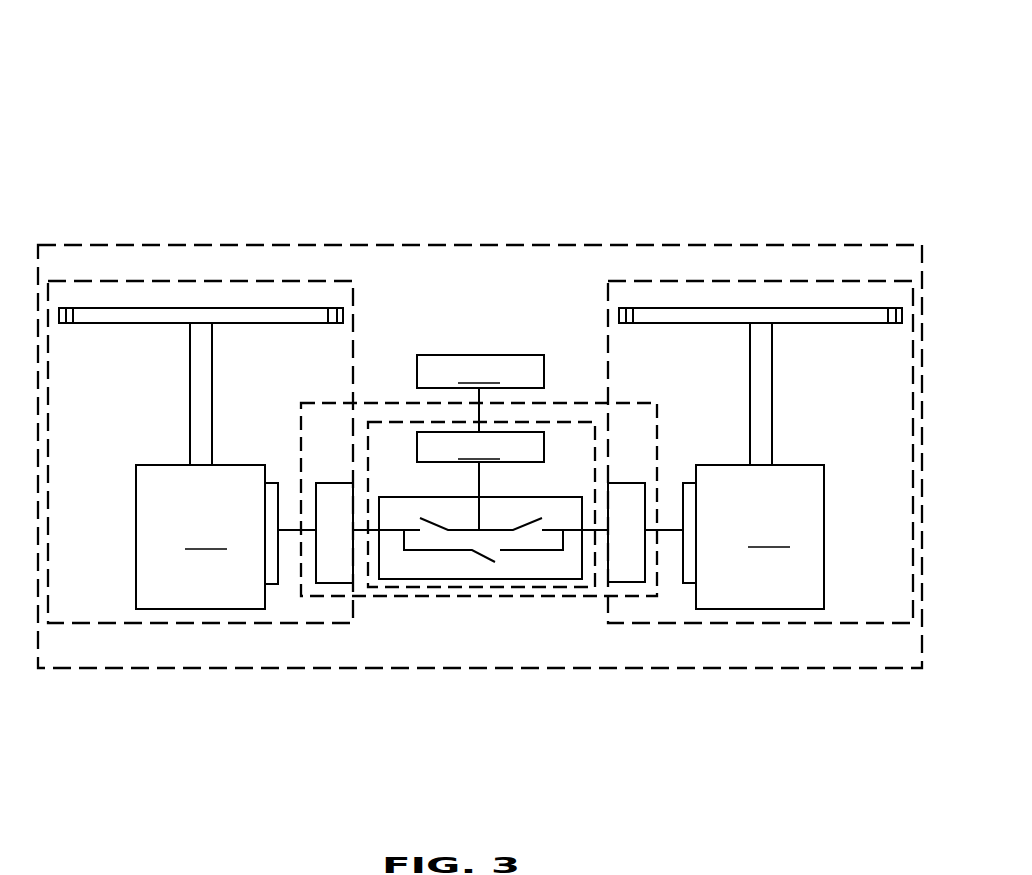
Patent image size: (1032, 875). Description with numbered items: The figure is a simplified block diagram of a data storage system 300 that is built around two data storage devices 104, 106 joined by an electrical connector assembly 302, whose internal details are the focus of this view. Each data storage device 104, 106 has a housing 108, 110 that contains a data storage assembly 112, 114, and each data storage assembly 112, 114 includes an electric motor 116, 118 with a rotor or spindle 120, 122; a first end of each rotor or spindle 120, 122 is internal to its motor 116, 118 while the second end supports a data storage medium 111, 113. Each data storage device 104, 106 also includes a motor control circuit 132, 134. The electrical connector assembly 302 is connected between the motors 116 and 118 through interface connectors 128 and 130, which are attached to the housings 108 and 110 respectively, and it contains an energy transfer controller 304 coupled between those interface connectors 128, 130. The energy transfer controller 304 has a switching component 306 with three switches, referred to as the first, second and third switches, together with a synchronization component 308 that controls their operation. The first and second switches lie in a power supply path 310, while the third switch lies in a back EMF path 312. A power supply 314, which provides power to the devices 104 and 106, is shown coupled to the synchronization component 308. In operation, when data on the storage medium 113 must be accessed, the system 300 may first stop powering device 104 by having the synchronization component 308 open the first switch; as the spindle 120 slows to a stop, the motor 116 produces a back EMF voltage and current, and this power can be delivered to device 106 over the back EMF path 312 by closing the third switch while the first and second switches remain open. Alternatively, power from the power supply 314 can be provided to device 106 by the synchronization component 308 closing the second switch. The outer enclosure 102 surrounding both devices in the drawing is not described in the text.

The data storage system 300 is at (562, 127).
The propulsion system housing 102 is at (438, 247).
The data storage device 104 is at (386, 332).
The data storage device 106 is at (592, 332).
The housing 108 is at (302, 279).
The housing 110 is at (662, 278).
The data storage medium 111 is at (245, 312).
The data storage medium 113 is at (697, 312).
The data storage assembly 112 is at (118, 486).
The data storage assembly 114 is at (843, 498).
The electric motor 116 is at (200, 537).
The electric motor 118 is at (760, 537).
The rotor or spindle 120 is at (189, 347).
The rotor or spindle 122 is at (773, 346).
The interface connector 128 is at (340, 570).
The interface connector 130 is at (617, 568).
The motor control circuit 132 is at (270, 574).
The motor control circuit 134 is at (690, 572).
The electrical connector assembly 302 is at (463, 593).
The energy transfer controller 304 is at (513, 593).
The switching component 306 is at (457, 495).
The synchronization component 308 is at (480, 447).
The power supply path 310 is at (482, 529).
The back EMF path 312 is at (520, 550).
The power supply 314 is at (480, 393).